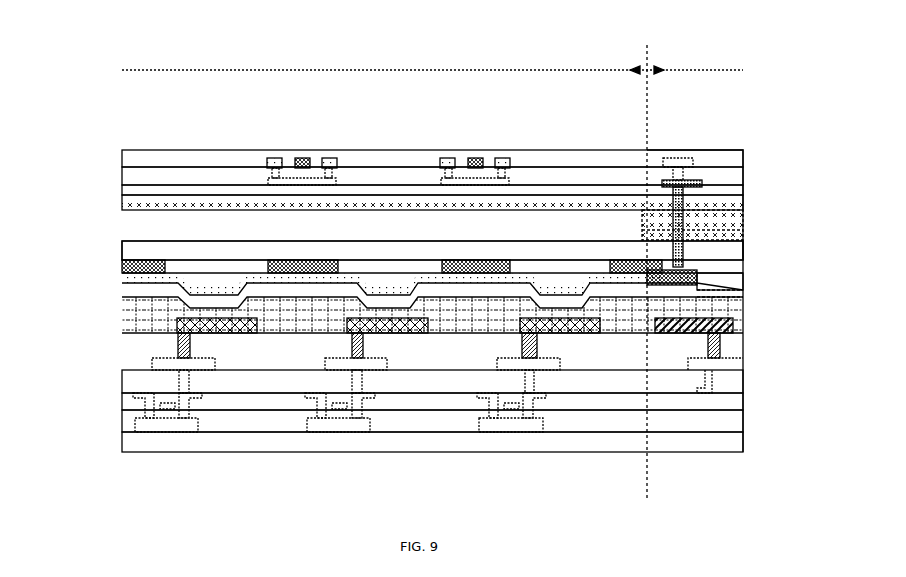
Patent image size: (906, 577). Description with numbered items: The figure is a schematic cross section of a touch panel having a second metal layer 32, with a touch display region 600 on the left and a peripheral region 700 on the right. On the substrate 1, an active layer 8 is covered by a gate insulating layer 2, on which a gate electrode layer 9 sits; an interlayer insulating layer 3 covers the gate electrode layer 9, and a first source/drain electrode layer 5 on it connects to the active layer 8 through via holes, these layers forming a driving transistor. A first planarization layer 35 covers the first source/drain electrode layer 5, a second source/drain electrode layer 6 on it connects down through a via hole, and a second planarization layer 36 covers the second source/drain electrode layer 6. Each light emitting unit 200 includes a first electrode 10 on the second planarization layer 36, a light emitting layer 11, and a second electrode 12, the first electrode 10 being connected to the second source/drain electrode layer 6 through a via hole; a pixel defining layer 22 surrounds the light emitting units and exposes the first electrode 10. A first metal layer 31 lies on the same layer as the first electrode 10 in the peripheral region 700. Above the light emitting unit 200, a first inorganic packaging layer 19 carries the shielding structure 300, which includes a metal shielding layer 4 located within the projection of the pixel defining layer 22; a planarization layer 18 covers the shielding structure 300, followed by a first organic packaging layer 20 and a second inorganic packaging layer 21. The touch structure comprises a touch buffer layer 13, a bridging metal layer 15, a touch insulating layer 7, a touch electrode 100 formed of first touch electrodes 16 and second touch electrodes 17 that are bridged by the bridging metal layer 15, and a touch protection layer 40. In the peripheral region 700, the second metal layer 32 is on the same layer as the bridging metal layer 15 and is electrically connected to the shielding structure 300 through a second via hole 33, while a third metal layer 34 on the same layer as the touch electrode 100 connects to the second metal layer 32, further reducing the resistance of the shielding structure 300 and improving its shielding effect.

The substrate 1 is at (192, 440).
The gate insulating layer 2 is at (225, 420).
The interlayer insulating layer 3 is at (245, 400).
The metal shielding layer 4 is at (122, 262).
The shielding structure 300 is at (432, 250).
The first source/drain electrode layer 5 is at (140, 393).
The second source/drain electrode layer 6 is at (155, 362).
The touch insulating layer 7 is at (134, 173).
The active layer 8 is at (153, 425).
The gate electrode layer 9 is at (165, 410).
The first electrode 10 is at (197, 331).
The light emitting layer 11 is at (197, 322).
The second electrode 12 is at (120, 287).
The touch buffer layer 13 is at (128, 194).
The bridging metal layer 15 is at (292, 180).
The first touch electrodes 16 is at (270, 160).
The second touch electrodes 17 is at (303, 160).
The planarization layer 18 is at (742, 283).
The first inorganic packaging layer 19 is at (735, 296).
The first organic packaging layer 20 is at (705, 228).
The second inorganic packaging layer 21 is at (735, 205).
The pixel defining layer 22 is at (735, 322).
The first metal layer 31 is at (722, 340).
The second metal layer 32 is at (700, 182).
The second via hole 33 is at (680, 268).
The third metal layer 34 is at (678, 165).
The first planarization layer 35 is at (578, 385).
The second planarization layer 36 is at (622, 355).
The touch protection layer 40 is at (575, 160).
The touch electrode 100 is at (345, 108).
The light emitting unit 200 is at (67, 321).
The touch display region 600 is at (432, 272).
The peripheral region 700 is at (695, 250).